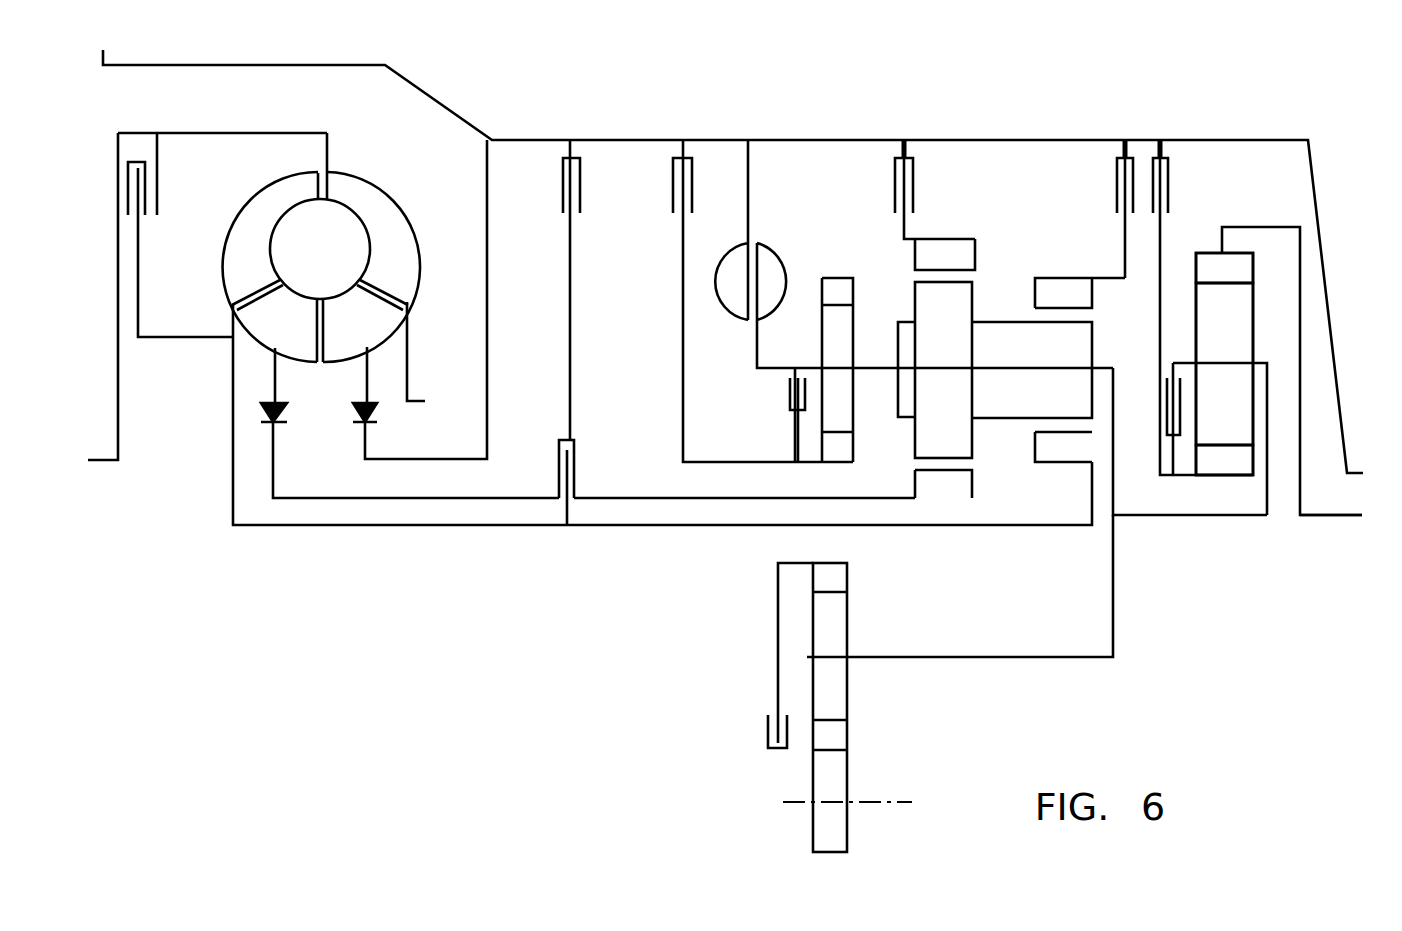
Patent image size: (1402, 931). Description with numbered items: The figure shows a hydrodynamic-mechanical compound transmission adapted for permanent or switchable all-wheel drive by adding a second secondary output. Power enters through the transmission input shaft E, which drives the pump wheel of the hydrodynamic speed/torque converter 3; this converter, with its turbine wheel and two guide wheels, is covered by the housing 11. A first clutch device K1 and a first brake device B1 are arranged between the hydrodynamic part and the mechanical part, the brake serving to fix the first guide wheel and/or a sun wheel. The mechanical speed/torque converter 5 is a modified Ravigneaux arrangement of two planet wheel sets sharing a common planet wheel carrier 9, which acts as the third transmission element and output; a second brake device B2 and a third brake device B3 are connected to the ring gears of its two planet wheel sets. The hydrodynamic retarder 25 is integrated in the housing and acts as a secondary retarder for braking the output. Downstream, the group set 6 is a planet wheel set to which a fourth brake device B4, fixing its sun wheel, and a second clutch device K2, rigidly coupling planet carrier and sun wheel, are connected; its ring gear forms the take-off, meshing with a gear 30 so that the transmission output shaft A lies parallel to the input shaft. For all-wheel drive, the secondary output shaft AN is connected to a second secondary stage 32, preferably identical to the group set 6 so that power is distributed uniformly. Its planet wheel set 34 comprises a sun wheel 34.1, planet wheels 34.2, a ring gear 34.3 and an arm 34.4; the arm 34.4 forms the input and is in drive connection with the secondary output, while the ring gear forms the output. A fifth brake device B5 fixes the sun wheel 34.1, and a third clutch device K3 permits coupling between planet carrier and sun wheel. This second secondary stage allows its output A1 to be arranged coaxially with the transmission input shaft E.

The housing 11 is at (267, 65).
The hydrodynamic speed/torque converter 3 is at (375, 178).
The hydrodynamic retarder 25 is at (759, 238).
The group set 6 is at (829, 271).
The mechanical speed/torque converter 5 is at (1010, 217).
The second secondary stage 32 is at (1225, 224).
The planet wheel set 34 is at (1238, 478).
The sun wheel 34.1 is at (1224, 460).
The planet wheels 34.2 is at (1224, 364).
The ring gear 34.3 is at (1224, 269).
The arm 34.4 is at (1268, 490).
The planet wheel carrier 9 is at (1113, 612).
The gear 30 is at (832, 825).
The transmission output shaft A is at (849, 778).
The output A1 is at (1349, 524).
The secondary output shaft AN is at (1190, 462).
The transmission input shaft E is at (197, 309).
The first brake device B1 is at (573, 140).
The second brake device B2 is at (905, 140).
The third brake device B3 is at (1125, 140).
The fourth brake device B4 is at (684, 140).
The fifth brake device B5 is at (1162, 140).
The first clutch device K1 is at (576, 473).
The second clutch device K2 is at (790, 401).
The third clutch device K3 is at (1165, 402).